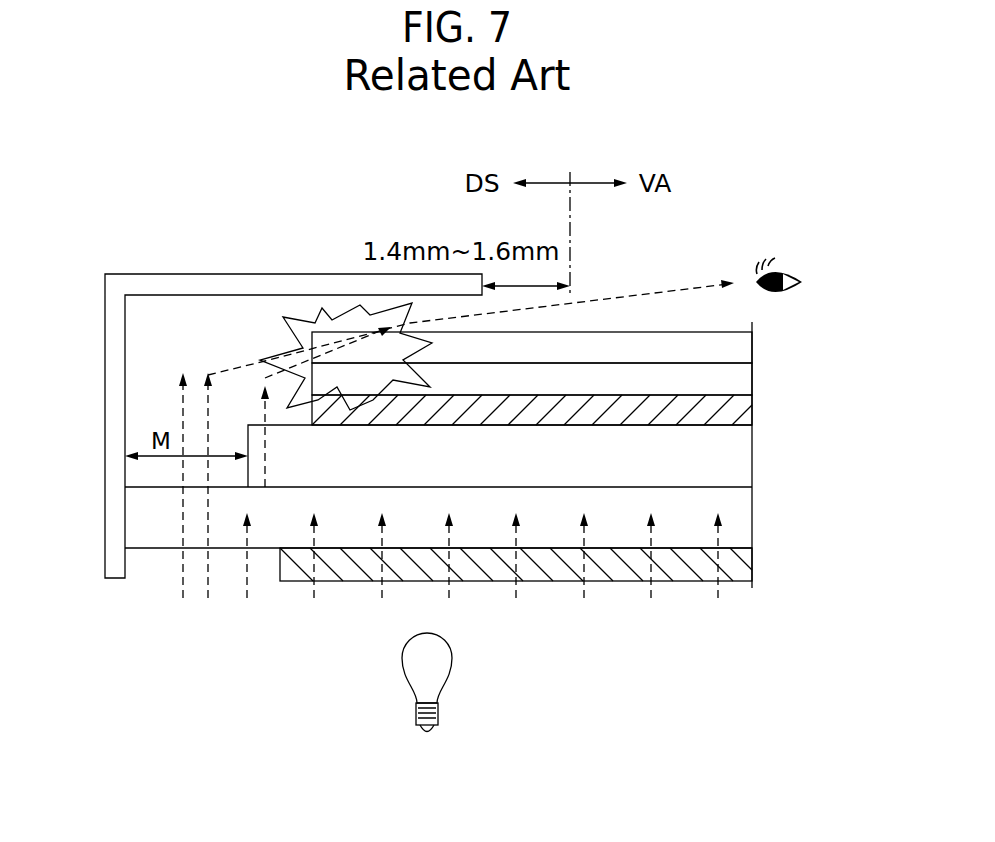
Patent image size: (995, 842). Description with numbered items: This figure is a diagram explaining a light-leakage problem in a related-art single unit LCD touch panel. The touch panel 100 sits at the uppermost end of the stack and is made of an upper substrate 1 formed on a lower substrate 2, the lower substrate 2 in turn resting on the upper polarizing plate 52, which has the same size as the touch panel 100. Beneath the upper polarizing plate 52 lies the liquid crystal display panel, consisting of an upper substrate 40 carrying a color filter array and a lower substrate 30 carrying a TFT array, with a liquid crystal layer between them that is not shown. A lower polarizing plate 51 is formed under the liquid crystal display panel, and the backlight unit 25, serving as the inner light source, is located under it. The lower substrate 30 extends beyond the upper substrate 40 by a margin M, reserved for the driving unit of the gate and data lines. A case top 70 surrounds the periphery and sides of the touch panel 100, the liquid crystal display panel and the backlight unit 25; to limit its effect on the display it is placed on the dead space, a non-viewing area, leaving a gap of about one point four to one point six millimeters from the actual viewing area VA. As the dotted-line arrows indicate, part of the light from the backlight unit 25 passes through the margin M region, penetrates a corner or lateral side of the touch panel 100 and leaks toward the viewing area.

The touch panel 100 is at (597, 363).
The upper substrate of touch panel 1 is at (752, 348).
The lower substrate of touch panel 2 is at (559, 379).
The upper polarizing plate 52 is at (752, 412).
The upper substrate 40 is at (745, 460).
The lower substrate 30 is at (745, 523).
The lower polarizing plate 51 is at (745, 570).
The case top 70 is at (112, 392).
The backlight unit 25 is at (443, 663).